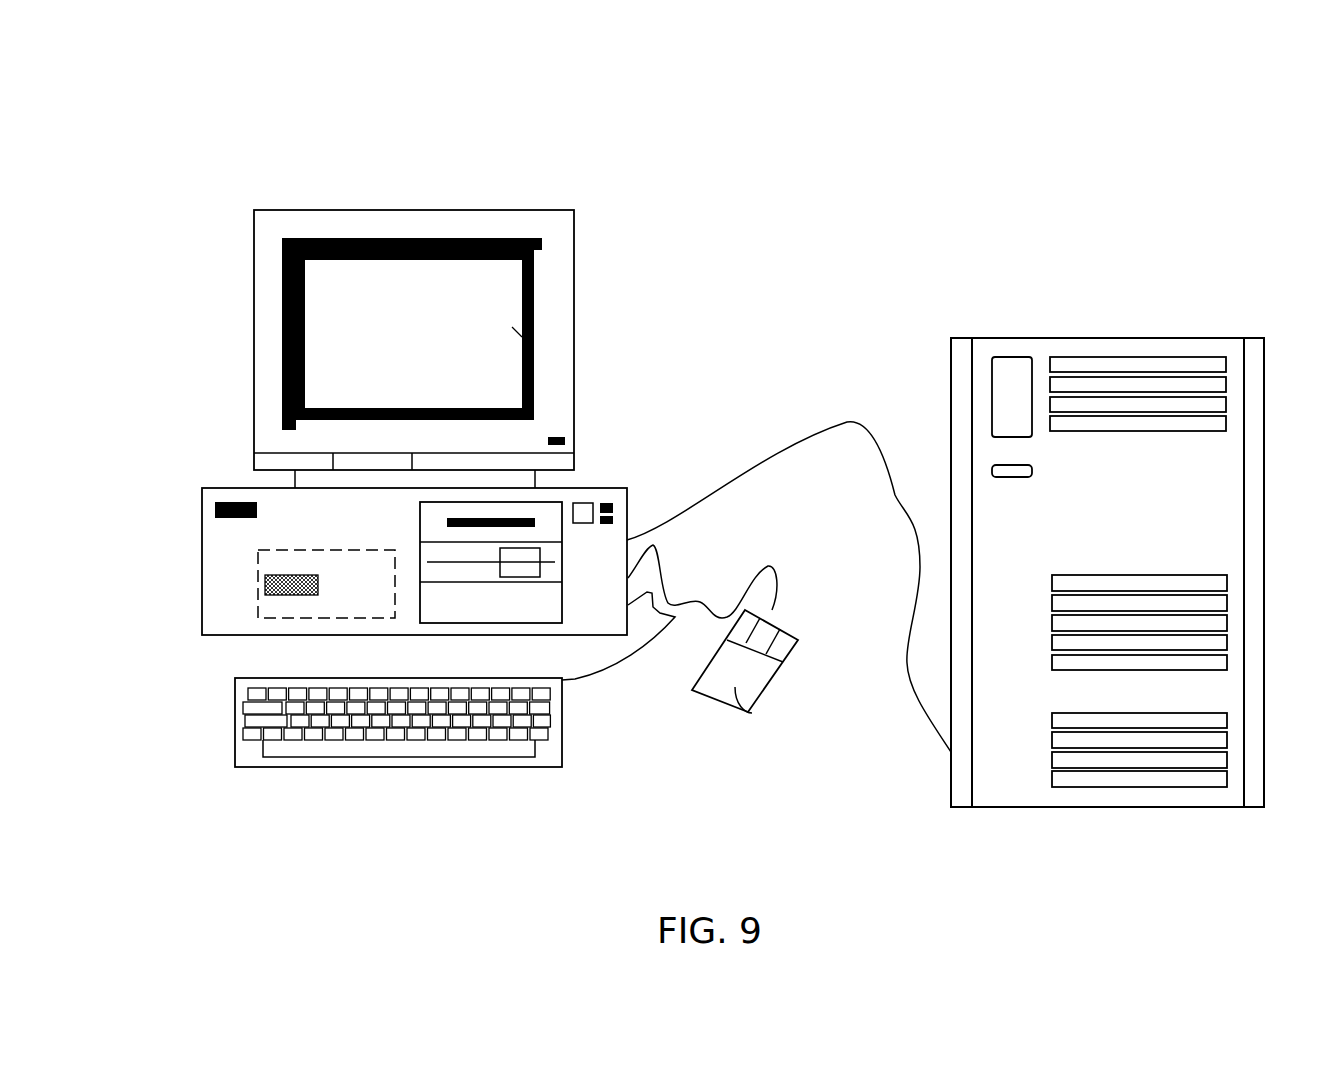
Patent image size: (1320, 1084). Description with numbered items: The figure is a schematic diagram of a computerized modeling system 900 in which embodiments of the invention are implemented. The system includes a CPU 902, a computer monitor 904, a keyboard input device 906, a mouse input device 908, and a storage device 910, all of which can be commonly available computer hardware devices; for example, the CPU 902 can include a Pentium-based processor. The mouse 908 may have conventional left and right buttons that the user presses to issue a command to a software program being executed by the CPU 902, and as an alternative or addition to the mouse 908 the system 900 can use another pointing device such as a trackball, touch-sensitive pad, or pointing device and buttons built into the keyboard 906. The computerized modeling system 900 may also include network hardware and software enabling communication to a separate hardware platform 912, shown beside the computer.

The computerized modeling system 900 is at (574, 151).
The CPU 902 is at (263, 591).
The computer monitor 904 is at (535, 343).
The keyboard input device 906 is at (235, 742).
The mouse input device 908 is at (752, 715).
The storage device 910 is at (532, 602).
The hardware platform 912 is at (1027, 338).